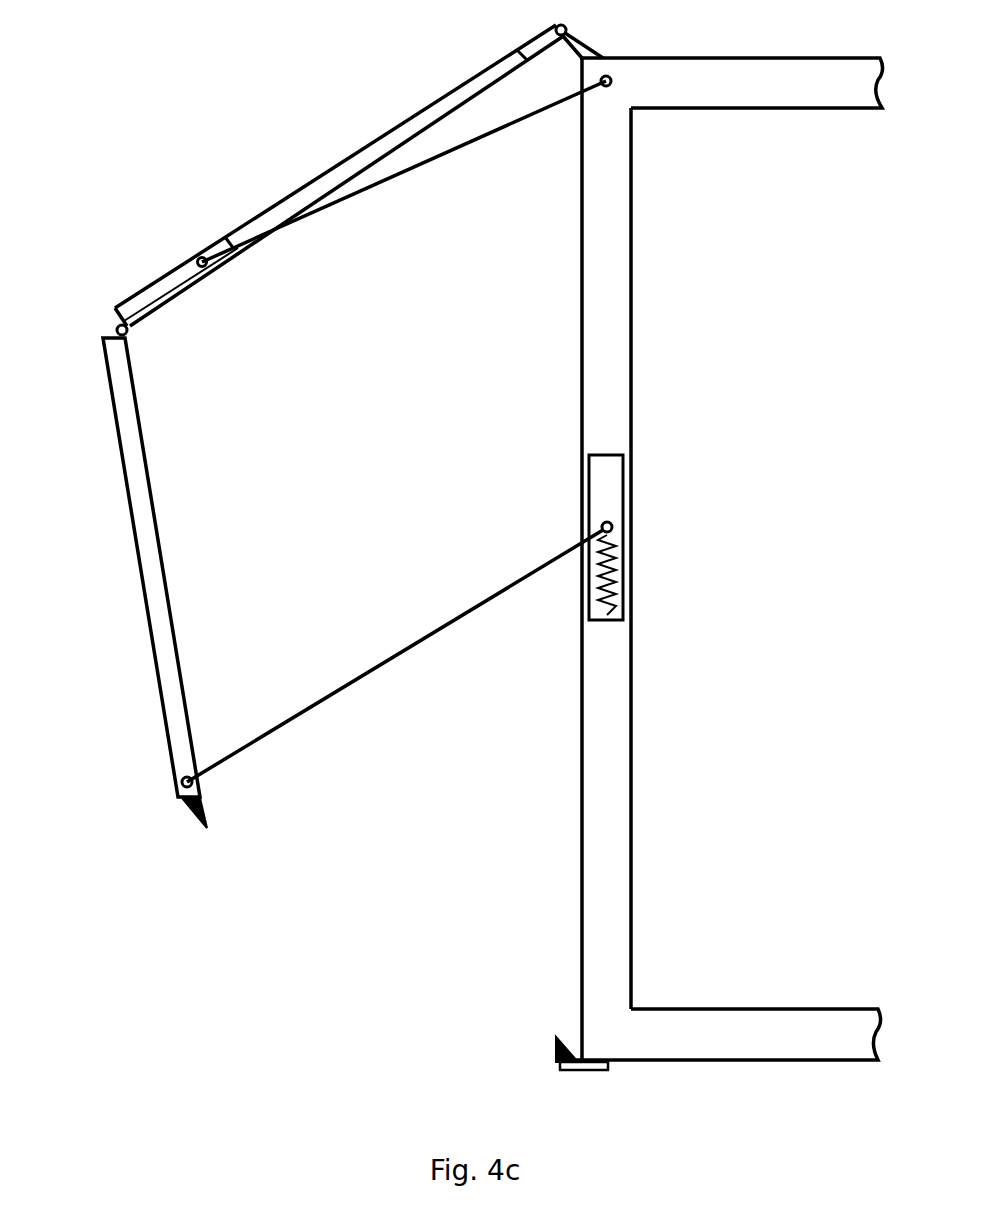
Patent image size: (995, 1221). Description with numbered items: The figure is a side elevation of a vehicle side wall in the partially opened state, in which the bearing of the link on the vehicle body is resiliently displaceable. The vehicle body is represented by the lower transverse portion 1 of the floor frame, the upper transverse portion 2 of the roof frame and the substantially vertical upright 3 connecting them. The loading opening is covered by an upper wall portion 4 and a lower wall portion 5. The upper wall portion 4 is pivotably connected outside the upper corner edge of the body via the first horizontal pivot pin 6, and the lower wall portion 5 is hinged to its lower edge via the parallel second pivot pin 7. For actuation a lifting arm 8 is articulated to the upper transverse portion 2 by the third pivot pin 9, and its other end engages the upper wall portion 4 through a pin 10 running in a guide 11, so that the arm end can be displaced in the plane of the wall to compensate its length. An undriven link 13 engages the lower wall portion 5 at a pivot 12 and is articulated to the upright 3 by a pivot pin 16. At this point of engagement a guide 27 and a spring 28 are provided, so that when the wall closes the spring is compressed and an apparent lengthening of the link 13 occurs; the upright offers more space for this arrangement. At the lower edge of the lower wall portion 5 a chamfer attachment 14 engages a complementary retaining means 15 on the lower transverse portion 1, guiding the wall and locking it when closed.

The lower transverse portion 1 is at (748, 1030).
The upper transverse portion 2 is at (750, 77).
The upright 3 is at (614, 735).
The upper wall portion 4 is at (392, 135).
The lower wall portion 5 is at (158, 640).
The first pivot pin 6 is at (553, 30).
The second pivot pin 7 is at (115, 328).
The lifting arm 8 is at (530, 115).
The third pivot pin 9 is at (608, 75).
The pin 10 is at (202, 257).
The guide 11 is at (135, 310).
The pivot 12 is at (178, 780).
The link 13 is at (345, 685).
The attachment 14 is at (202, 800).
The retaining means 15 is at (556, 1065).
The pivot pin 16 is at (613, 525).
The guide 27 is at (612, 482).
The spring 28 is at (616, 584).